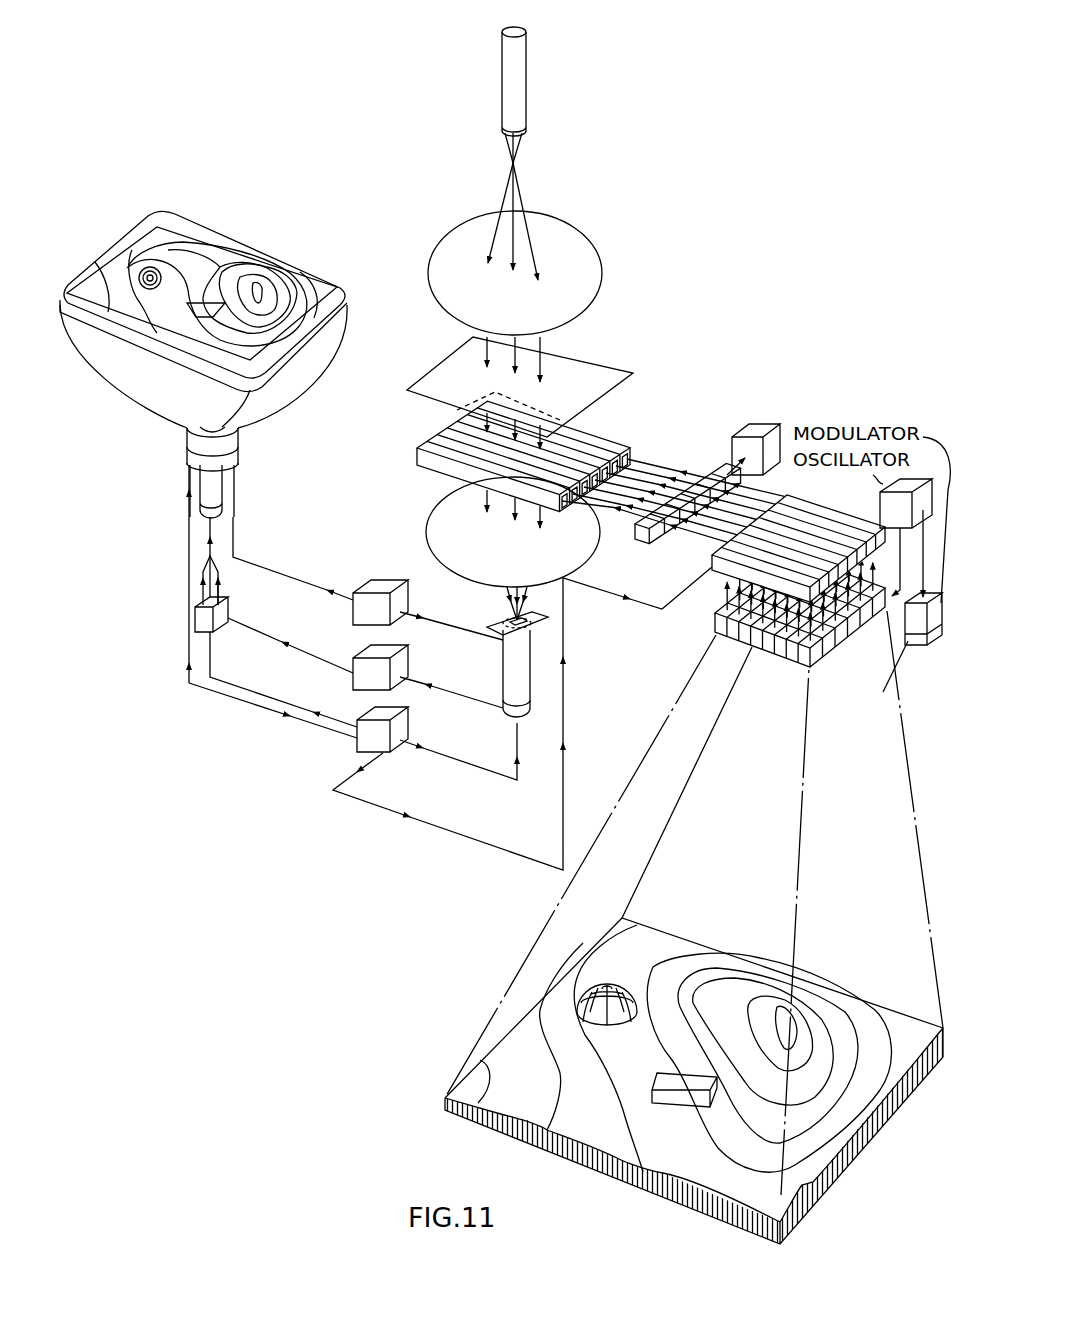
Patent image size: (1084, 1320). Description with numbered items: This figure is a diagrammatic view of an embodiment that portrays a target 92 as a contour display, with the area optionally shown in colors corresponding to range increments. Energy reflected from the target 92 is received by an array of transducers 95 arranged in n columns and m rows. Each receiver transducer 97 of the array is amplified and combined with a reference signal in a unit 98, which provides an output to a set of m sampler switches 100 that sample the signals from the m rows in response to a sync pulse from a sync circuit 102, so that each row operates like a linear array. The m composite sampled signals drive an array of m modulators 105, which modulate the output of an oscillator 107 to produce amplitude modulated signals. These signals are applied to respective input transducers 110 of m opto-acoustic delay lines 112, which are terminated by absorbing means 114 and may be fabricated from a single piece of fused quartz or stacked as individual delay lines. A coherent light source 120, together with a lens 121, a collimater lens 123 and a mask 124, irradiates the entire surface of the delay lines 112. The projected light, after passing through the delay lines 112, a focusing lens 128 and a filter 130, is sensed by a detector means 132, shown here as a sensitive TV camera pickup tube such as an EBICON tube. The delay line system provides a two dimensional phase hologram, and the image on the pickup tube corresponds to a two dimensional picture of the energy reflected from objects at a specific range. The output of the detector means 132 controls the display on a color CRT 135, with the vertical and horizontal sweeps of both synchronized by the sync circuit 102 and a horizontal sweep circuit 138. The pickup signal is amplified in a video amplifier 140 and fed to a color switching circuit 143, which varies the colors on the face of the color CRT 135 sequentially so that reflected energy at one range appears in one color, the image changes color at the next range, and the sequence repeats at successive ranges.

The target 92 is at (673, 940).
The array of transducers 95 is at (782, 600).
The receiver transducer 97 is at (715, 632).
The unit 98 is at (716, 612).
The sampler switches 100 is at (715, 561).
The sync circuit 102 is at (367, 720).
The modulators 105 is at (714, 470).
The oscillator 107 is at (730, 440).
The input transducers 110 is at (632, 452).
The opto-acoustic delay lines 112 is at (435, 466).
The absorbing means 114 is at (529, 464).
The coherent light source 120 is at (524, 78).
The lens 121 is at (502, 131).
The collimater lens 123 is at (592, 268).
The mask 124 is at (580, 362).
The focusing lens 128 is at (433, 545).
The filter 130 is at (490, 626).
The detector means 132 is at (503, 658).
The color CRT 135 is at (145, 400).
The horizontal sweep circuit 138 is at (367, 585).
The video amplifier 140 is at (366, 650).
The color switching circuit 143 is at (227, 609).